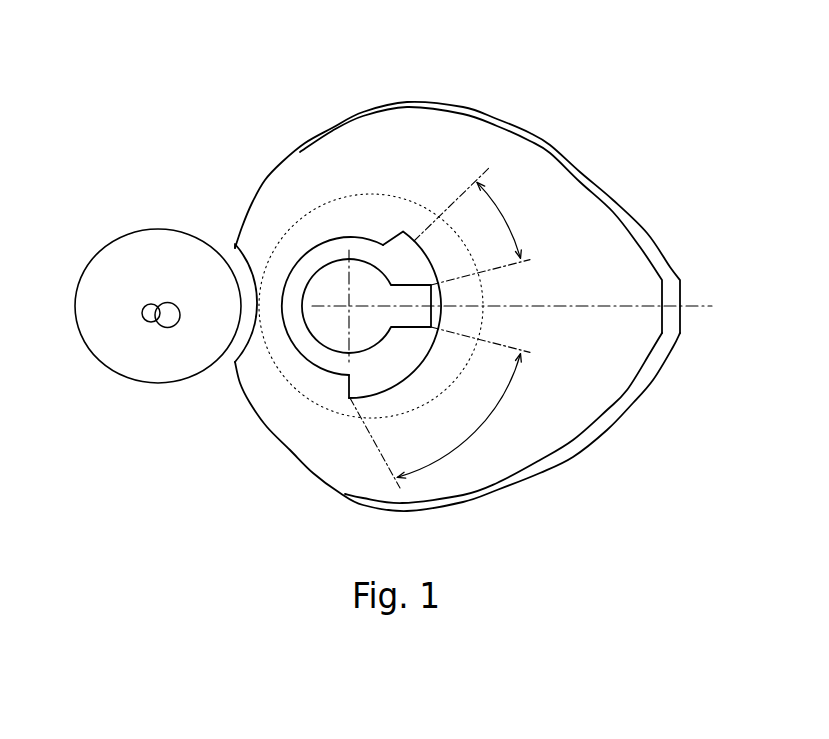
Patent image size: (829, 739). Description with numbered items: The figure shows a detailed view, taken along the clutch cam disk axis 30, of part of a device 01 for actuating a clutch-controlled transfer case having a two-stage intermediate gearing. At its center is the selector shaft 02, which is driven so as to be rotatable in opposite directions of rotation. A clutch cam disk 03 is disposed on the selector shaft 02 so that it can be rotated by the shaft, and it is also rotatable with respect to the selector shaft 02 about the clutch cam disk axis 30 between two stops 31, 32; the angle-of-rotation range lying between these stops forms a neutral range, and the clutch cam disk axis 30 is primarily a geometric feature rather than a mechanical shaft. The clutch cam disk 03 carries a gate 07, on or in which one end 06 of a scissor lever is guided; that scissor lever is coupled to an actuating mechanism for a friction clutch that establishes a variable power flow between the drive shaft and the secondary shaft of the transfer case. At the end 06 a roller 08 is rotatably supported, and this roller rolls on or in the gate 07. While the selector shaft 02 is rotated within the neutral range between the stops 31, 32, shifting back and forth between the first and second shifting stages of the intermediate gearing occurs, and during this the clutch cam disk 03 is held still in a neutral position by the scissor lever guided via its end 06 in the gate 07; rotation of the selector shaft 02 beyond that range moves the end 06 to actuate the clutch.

The device 01 is at (106, 96).
The selector shaft 02 is at (363, 282).
The clutch cam disk 03 is at (513, 163).
The end 06 is at (170, 316).
The gate 07 is at (620, 418).
The roller 08 is at (131, 265).
The clutch cam disk axis 30 is at (348, 305).
The stop 31 is at (403, 232).
The stop 32 is at (347, 387).